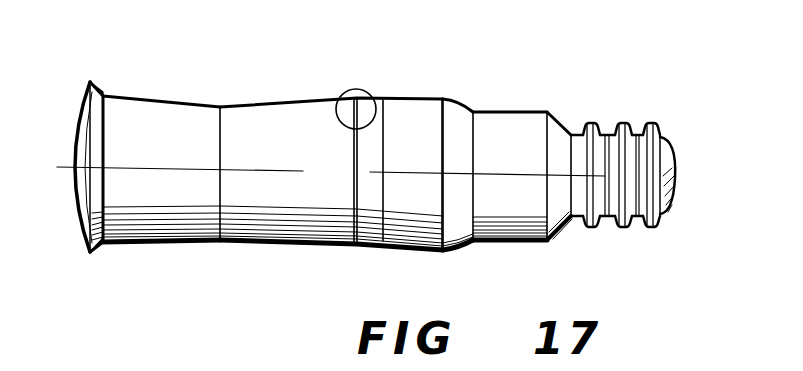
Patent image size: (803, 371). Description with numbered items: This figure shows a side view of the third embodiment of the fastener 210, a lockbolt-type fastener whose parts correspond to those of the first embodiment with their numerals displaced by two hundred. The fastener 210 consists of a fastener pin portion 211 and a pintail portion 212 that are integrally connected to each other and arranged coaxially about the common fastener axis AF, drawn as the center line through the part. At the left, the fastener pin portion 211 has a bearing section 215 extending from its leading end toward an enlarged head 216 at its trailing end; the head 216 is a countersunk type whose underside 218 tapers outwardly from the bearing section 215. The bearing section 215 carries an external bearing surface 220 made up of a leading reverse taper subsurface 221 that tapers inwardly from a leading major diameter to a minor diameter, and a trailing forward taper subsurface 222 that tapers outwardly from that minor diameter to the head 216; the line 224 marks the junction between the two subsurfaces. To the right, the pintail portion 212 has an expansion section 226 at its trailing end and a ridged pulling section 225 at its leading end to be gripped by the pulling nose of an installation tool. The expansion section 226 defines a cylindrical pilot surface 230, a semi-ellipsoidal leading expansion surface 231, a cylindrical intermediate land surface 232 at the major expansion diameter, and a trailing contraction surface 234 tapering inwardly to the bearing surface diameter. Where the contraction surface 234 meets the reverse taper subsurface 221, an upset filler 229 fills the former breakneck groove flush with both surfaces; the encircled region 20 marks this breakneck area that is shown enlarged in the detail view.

The fastener 210 is at (297, 59).
The fastener pin portion 211 is at (200, 67).
The pintail portion 212 is at (572, 119).
The bearing section 215 is at (196, 104).
The enlarged head 216 is at (78, 186).
The underside of head 218 is at (102, 94).
The bearing surface 220 is at (268, 103).
The reverse taper subsurface 221 is at (283, 243).
The forward taper subsurface 222 is at (181, 99).
The junction line 224 is at (222, 149).
The pulling section 225 is at (668, 132).
The expansion section 226 is at (519, 99).
The upset filler 229 is at (355, 250).
The pilot surface 230 is at (527, 110).
The leading expansion surface 231 is at (467, 107).
The intermediate land surface 232 is at (413, 102).
The contraction surface 234 is at (367, 250).
The bearing surface 20 is at (373, 94).
The fastener axis AF is at (167, 167).